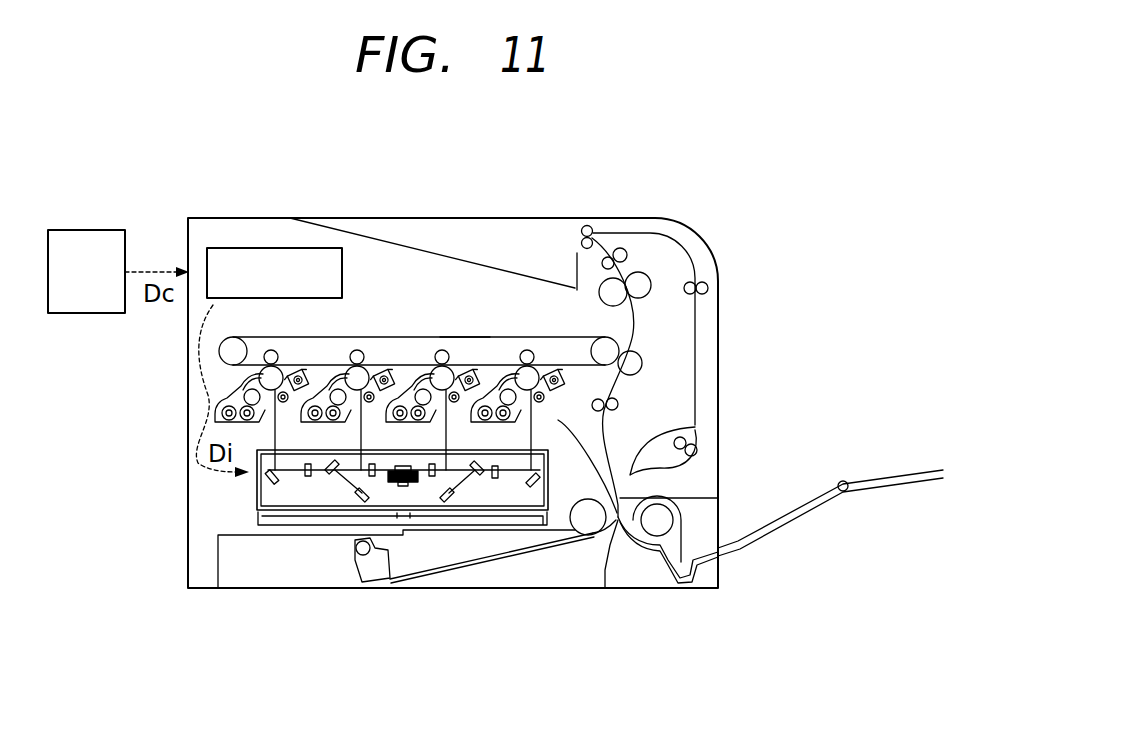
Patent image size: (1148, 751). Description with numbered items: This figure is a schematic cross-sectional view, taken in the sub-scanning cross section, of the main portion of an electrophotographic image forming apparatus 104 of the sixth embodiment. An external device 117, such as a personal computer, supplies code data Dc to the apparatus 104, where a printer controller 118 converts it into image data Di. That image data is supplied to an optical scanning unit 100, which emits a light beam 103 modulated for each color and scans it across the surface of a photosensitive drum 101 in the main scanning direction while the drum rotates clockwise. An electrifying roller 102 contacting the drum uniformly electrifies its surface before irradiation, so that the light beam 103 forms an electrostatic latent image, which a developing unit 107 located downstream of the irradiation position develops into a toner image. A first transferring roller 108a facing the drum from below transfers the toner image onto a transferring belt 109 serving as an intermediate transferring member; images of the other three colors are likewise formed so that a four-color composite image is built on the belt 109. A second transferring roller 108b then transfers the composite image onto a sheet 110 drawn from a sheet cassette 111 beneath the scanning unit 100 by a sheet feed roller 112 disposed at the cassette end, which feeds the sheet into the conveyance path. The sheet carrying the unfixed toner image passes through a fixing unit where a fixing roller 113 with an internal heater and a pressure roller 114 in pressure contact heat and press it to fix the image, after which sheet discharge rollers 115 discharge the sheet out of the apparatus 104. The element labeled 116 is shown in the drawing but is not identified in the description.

The optical scanning unit 100 is at (257, 498).
The photosensitive drum 101 is at (424, 365).
The electrifying roller 102 is at (488, 523).
The light beam 103 is at (450, 438).
The image forming apparatus 104 is at (623, 560).
The developing unit 107 is at (387, 511).
The first transferring roller 108a is at (640, 358).
The second transferring roller 108b is at (462, 340).
The transferring belt 109 is at (500, 350).
The sheet 110 is at (700, 428).
The sheet cassette 111 is at (313, 563).
The sheet feed roller 112 is at (606, 550).
The fixing roller 113 is at (647, 278).
The pressure roller 114 is at (622, 282).
The sheet discharge rollers 115 is at (596, 226).
The discharge tray 116 is at (533, 240).
The external device 117 is at (92, 315).
The printer controller 118 is at (268, 254).